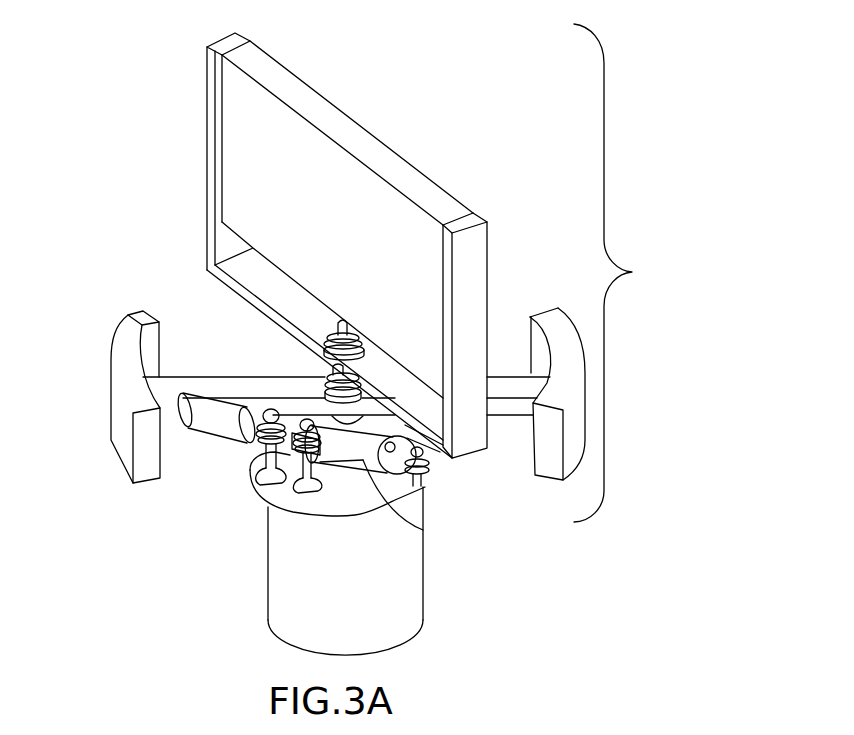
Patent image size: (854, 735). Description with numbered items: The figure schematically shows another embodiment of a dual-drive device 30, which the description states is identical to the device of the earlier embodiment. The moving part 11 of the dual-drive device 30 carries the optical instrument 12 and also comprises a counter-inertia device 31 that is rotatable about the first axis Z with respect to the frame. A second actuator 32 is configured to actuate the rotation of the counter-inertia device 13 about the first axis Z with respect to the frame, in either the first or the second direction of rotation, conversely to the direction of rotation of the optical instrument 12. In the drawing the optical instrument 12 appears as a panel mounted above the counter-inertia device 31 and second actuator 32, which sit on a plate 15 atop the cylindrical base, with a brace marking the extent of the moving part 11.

The moving part 11 is at (636, 272).
The optical instrument 12 is at (217, 150).
The counter-inertia device 13 is at (287, 592).
The support plate 15 is at (427, 530).
The dual-drive device 30 is at (140, 163).
The counter-inertia device 31 is at (118, 372).
The second actuator 32 is at (217, 425).